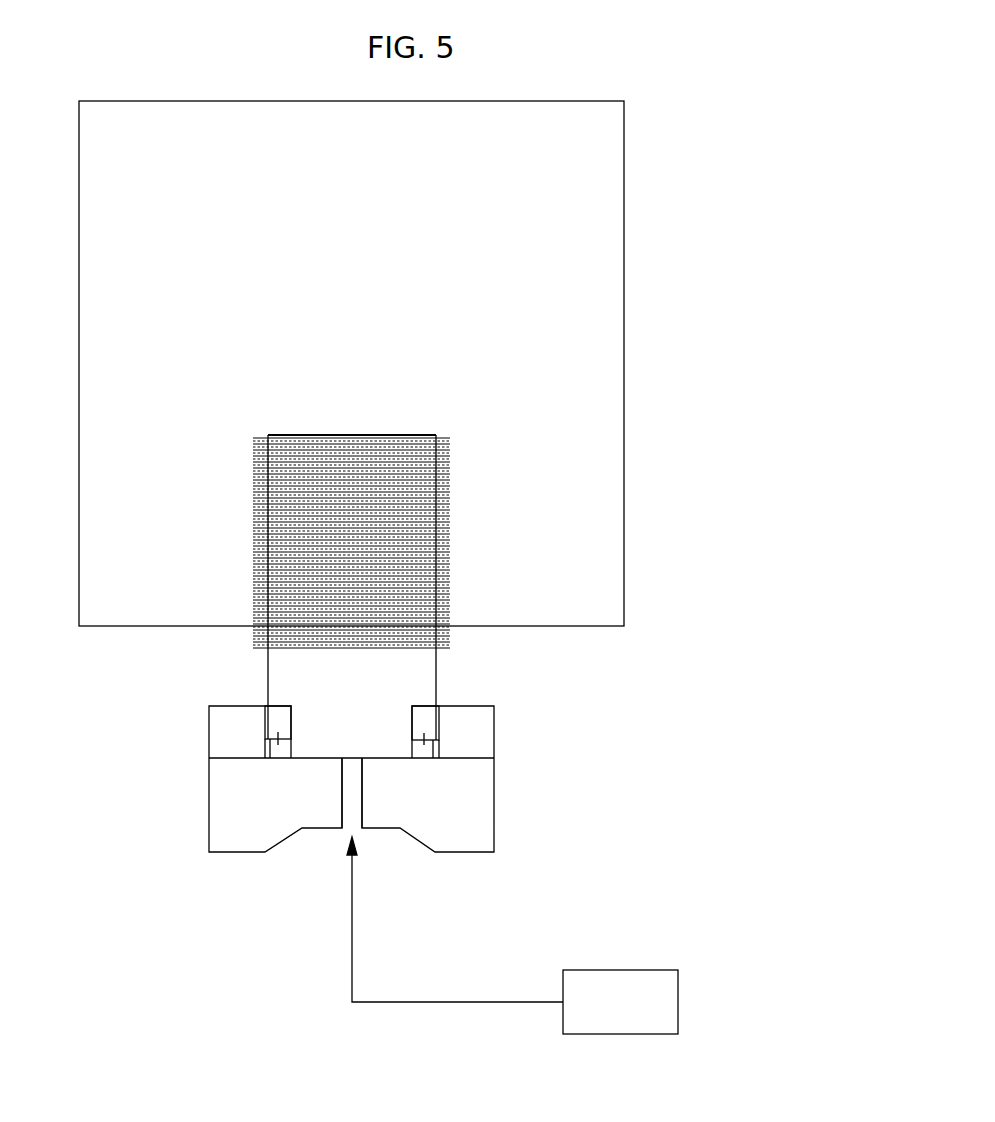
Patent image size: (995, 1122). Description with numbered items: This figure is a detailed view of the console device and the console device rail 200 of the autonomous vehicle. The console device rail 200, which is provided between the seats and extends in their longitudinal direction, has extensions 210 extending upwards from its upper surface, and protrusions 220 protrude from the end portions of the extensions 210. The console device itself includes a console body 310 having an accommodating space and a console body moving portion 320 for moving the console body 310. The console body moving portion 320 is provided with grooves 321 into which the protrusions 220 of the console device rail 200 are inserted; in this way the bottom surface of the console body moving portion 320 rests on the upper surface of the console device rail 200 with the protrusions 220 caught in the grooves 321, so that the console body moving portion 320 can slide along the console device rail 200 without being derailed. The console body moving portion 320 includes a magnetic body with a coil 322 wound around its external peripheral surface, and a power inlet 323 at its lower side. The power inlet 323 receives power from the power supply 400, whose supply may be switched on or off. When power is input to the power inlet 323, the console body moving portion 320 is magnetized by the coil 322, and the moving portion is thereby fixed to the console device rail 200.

The console body 310 is at (597, 225).
The coil 322 is at (450, 502).
The console body moving portion 320 is at (283, 672).
The groove 321 is at (288, 718).
The console device rail 200 is at (483, 802).
The extension 210 is at (228, 745).
The protrusion 220 is at (278, 745).
The power inlet 323 is at (347, 760).
The power supply 400 is at (512, 935).